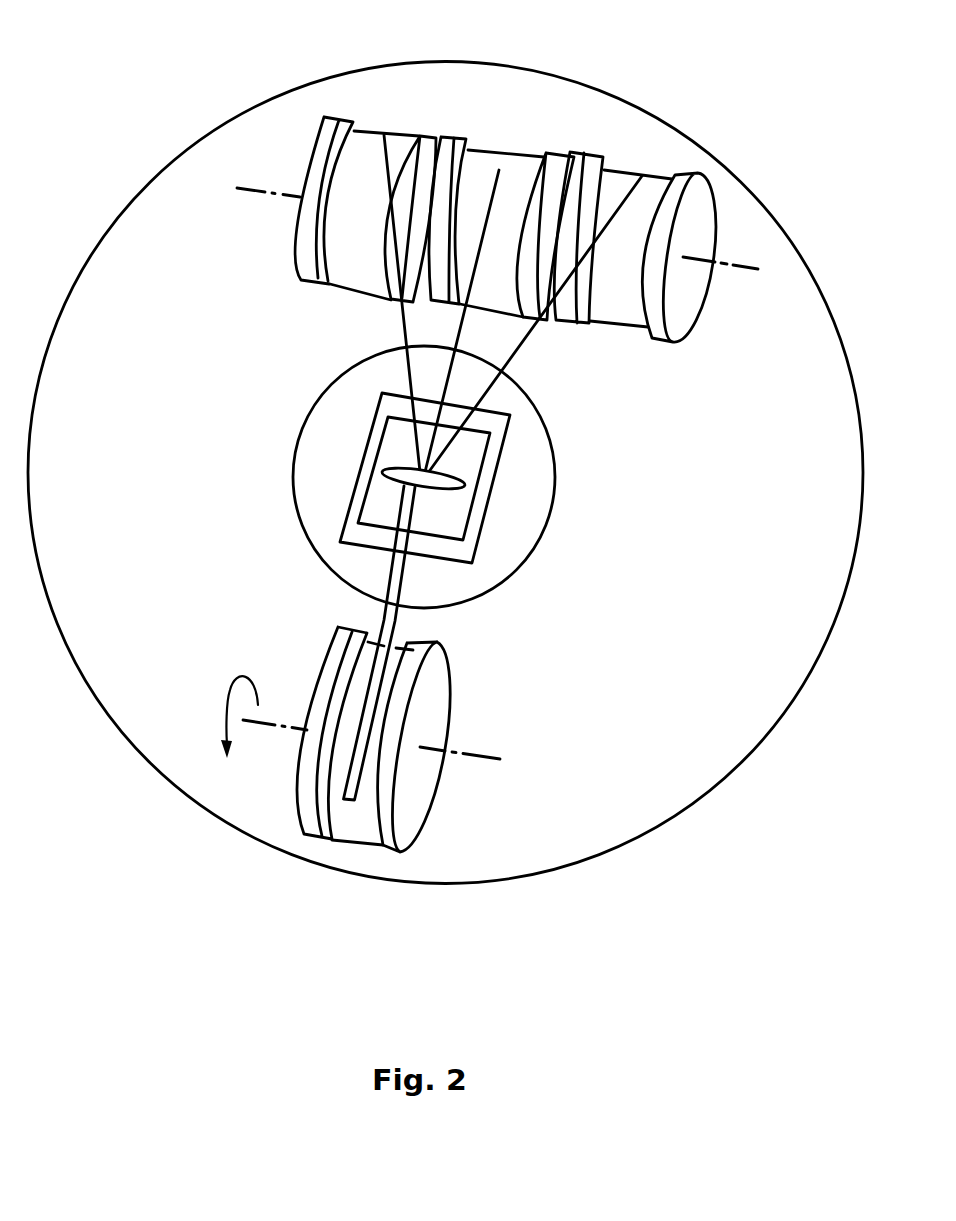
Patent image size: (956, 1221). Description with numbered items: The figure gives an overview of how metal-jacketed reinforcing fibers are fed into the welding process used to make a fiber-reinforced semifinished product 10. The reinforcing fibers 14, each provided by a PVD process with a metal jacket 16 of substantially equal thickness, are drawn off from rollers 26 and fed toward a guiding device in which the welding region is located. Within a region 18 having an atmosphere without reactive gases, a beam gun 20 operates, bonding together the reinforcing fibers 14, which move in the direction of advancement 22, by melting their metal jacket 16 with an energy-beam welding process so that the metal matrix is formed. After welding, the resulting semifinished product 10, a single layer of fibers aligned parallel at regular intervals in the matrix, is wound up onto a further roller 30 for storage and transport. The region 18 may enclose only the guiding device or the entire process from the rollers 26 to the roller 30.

The semifinished product 10 is at (360, 754).
The reinforcing fibers 14 is at (460, 238).
The metal jacket 16 is at (499, 170).
The region 18 is at (293, 507).
The beam gun 20 is at (502, 447).
The direction of advancement 22 is at (364, 606).
The rollers 26 is at (332, 115).
The further roller 30 is at (300, 787).